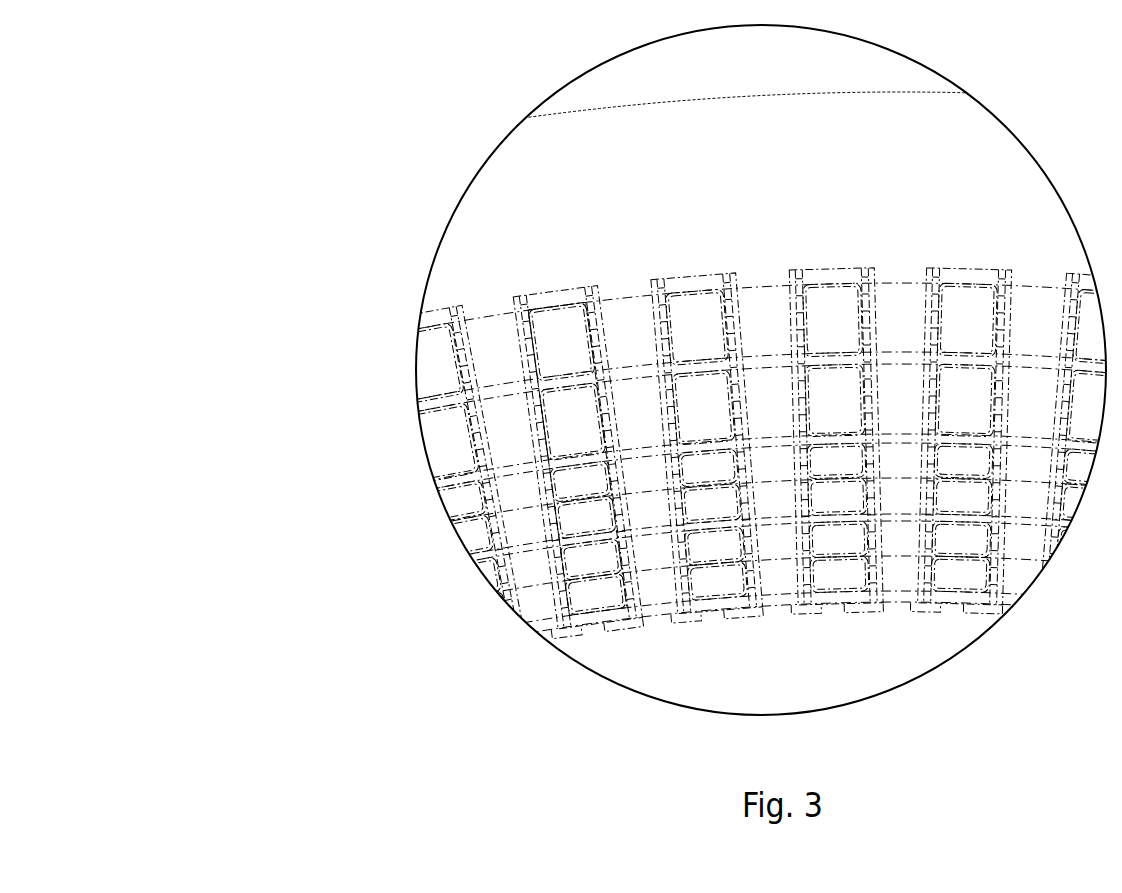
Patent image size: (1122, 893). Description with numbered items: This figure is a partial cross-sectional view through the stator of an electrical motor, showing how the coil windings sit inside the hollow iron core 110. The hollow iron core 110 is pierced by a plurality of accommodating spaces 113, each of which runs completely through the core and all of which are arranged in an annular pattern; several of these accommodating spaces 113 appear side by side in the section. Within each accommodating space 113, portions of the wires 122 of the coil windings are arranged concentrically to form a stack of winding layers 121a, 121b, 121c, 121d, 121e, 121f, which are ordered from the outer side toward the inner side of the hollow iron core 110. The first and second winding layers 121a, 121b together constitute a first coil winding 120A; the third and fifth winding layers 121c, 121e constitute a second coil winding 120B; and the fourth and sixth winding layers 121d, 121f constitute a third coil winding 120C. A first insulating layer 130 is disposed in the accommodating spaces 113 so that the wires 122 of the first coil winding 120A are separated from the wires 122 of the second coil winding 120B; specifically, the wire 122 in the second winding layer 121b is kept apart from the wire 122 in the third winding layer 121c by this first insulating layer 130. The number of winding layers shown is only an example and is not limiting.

The hollow iron core 110 is at (595, 175).
The accommodating space 113 is at (582, 282).
The wire 122 is at (559, 318).
The first insulating layer 130 is at (545, 303).
The first winding layer 121a is at (545, 340).
The second winding layer 121b is at (557, 421).
The third winding layer 121c is at (558, 483).
The fourth winding layer 121d is at (591, 530).
The fifth winding layer 121e is at (573, 562).
The sixth winding layer 121f is at (608, 612).
The first coil winding 120A is at (399, 381).
The second coil winding 120B is at (409, 521).
The third coil winding 120C is at (597, 639).